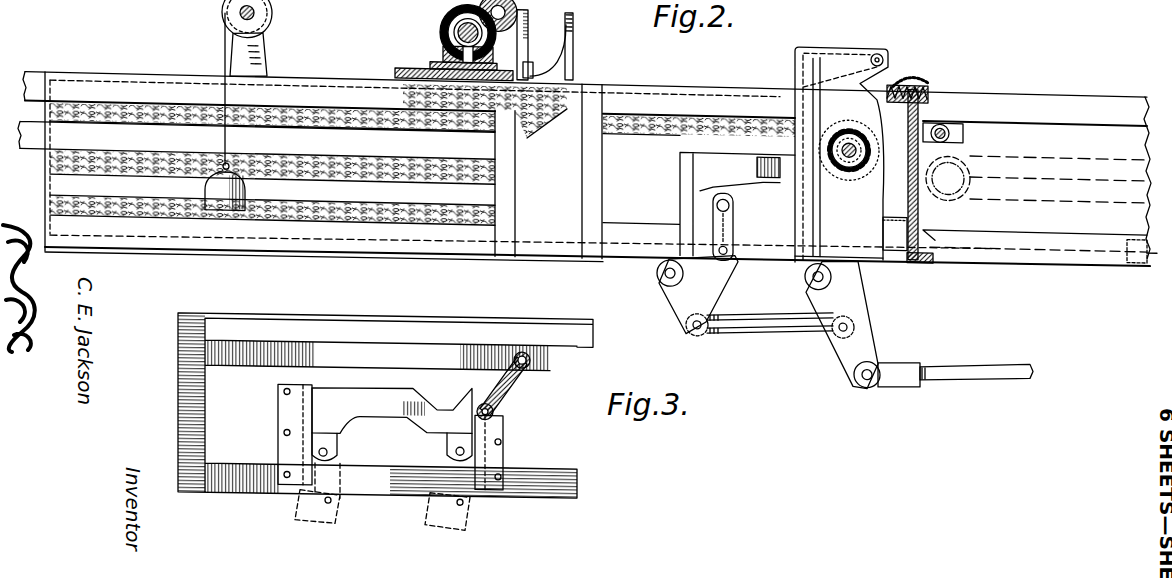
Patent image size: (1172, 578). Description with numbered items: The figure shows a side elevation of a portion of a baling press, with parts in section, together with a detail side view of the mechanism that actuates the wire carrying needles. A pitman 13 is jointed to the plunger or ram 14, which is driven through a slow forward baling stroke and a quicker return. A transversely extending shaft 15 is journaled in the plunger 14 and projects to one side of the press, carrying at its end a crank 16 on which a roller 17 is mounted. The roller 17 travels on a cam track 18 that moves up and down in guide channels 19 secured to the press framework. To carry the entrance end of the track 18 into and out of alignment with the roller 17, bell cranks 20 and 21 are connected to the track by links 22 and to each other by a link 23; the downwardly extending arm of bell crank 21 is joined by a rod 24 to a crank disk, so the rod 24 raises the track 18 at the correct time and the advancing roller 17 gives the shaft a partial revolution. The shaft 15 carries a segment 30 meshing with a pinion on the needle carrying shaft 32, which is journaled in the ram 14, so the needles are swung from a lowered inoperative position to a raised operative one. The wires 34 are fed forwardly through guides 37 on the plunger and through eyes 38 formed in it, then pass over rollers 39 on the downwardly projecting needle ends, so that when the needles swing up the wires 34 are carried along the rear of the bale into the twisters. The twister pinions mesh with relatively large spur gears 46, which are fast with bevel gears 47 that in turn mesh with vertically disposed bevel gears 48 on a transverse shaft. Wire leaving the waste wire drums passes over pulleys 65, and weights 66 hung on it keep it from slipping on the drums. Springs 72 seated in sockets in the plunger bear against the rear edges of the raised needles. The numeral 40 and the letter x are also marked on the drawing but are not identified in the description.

In FIG. 2, the pitman 13 is at (1036, 144).
In FIG. 2, the plunger or ram 14 is at (923, 199).
In FIG. 2, the transversely extending shaft 15 is at (948, 110).
In FIG. 3, the transversely extending shaft 15 is at (548, 353).
In FIG. 3, the crank 16 is at (520, 382).
In FIG. 3, the roller 17 is at (497, 409).
In FIG. 2, the cam track 18 is at (760, 152).
In FIG. 3, the cam track 18 is at (390, 416).
In FIG. 3, the guide channels 19 is at (282, 419).
In FIG. 2, the bell crank 20 is at (695, 276).
In FIG. 2, the bell crank 21 is at (815, 280).
In FIG. 2, the links 22 is at (713, 199).
In FIG. 2, the link 23 is at (763, 316).
In FIG. 2, the rod 24 is at (957, 353).
In FIG. 2, the segment 30 is at (915, 84).
In FIG. 2, the needle carrying shaft 32 is at (850, 127).
In FIG. 2, the wires 34 is at (922, 236).
In FIG. 2, the guides 37 is at (1135, 236).
In FIG. 2, the eyes 38 is at (902, 227).
In FIG. 2, the rollers 39 is at (800, 243).
In FIG. 2, the frame 40 is at (960, 5).
In FIG. 2, the spur gears 46 is at (428, 55).
In FIG. 2, the bevel gears 47 is at (448, 45).
In FIG. 2, the bevel gears 48 is at (447, 7).
In FIG. 2, the pulleys 65 is at (222, 5).
In FIG. 2, the weights 66 is at (213, 195).
In FIG. 2, the springs 72 is at (895, 65).
In FIG. 2, the bracket x is at (577, 40).